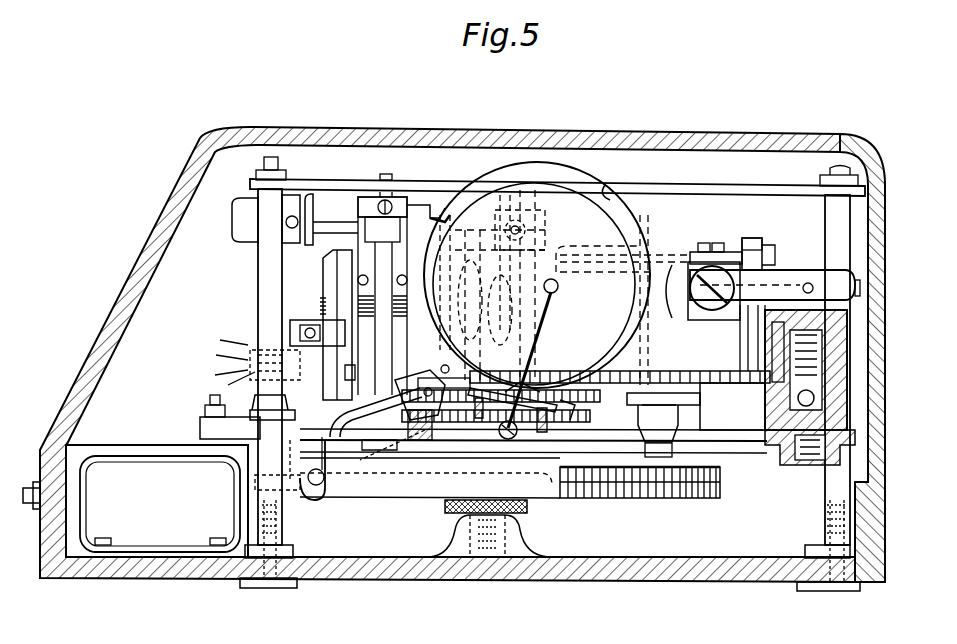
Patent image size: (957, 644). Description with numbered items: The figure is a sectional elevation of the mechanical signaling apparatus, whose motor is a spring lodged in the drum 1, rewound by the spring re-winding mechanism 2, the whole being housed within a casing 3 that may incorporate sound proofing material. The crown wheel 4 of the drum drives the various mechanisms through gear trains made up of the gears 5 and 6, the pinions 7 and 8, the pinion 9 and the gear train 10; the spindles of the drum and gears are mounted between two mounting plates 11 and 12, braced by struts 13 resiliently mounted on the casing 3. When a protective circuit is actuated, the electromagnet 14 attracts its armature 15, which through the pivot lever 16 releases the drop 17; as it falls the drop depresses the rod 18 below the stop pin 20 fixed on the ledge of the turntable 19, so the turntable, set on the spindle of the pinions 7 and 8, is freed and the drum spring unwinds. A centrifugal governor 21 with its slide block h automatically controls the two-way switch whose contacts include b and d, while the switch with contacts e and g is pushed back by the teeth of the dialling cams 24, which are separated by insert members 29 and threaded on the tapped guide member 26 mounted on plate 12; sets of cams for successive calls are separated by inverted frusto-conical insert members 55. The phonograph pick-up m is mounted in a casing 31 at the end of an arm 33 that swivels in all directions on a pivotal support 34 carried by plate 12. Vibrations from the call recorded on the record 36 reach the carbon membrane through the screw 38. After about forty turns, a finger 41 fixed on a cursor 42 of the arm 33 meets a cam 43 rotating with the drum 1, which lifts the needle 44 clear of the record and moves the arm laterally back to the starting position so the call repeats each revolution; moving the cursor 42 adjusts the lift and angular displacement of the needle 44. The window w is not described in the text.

The drum 1 is at (735, 378).
The spring re-winding mechanism 2 is at (772, 252).
The casing 3 is at (722, 147).
The crown wheel 4 is at (700, 402).
The gear train pinion 5 is at (516, 315).
The toothed wheel 6 is at (604, 398).
The pinion 7 is at (478, 370).
The pinion 8 is at (580, 410).
The pinion 9 is at (345, 392).
The gear train 10 is at (372, 455).
The mounting plate 11 is at (400, 182).
The mounting plate 12 is at (858, 447).
The struts 13 is at (270, 192).
The electromagnet 14 is at (478, 320).
The armature 15 is at (560, 282).
The pivot lever 16 is at (443, 216).
The drop 17 is at (437, 200).
The rod 18 is at (310, 495).
The turntable 19 is at (440, 490).
The stop pin 20 is at (325, 495).
The centrifugal governor 21 is at (345, 263).
The dialling cams 24 is at (320, 334).
The tapped guide member 26 is at (345, 428).
The insert member 29 is at (328, 305).
The casing 31 is at (582, 190).
The arm 33 is at (850, 283).
The pivotal support 34 is at (830, 382).
The record 36 is at (722, 476).
The screw 38 is at (552, 298).
The finger 41 is at (720, 243).
The cursor 42 is at (706, 310).
The cam 43 is at (753, 240).
The needle 44 is at (505, 440).
The inverted frusto-conical insert members 55 is at (510, 430).
The switch contact b is at (262, 340).
The switch contact d is at (240, 357).
The switch contact e is at (262, 332).
The switch contact g is at (275, 345).
The slide block h is at (430, 430).
The phonograph pick-up m is at (608, 188).
The window w is at (150, 480).